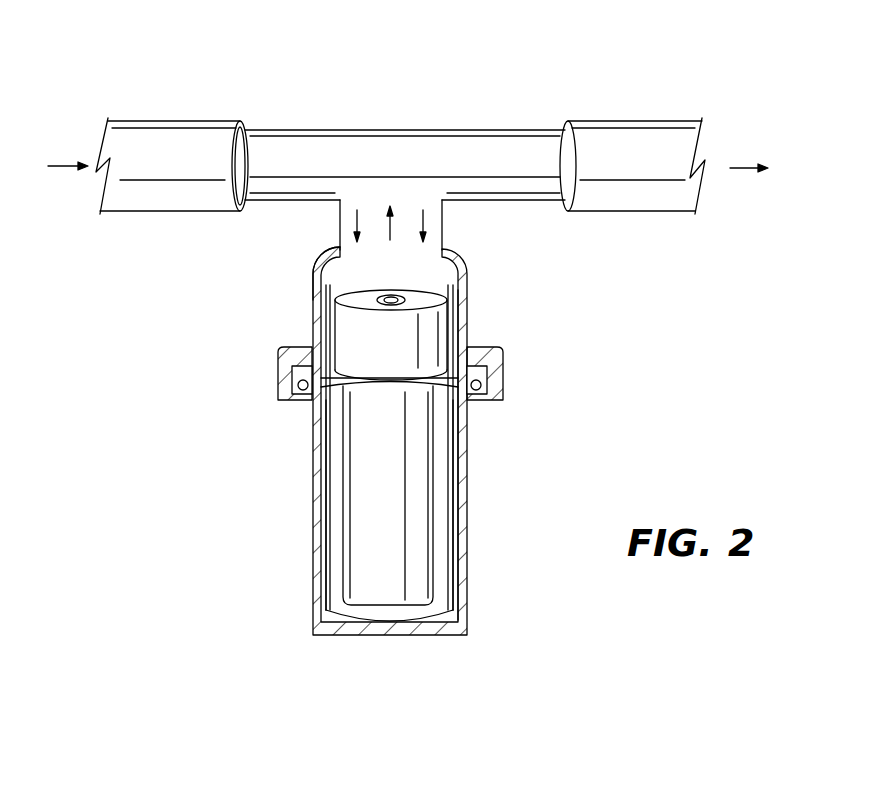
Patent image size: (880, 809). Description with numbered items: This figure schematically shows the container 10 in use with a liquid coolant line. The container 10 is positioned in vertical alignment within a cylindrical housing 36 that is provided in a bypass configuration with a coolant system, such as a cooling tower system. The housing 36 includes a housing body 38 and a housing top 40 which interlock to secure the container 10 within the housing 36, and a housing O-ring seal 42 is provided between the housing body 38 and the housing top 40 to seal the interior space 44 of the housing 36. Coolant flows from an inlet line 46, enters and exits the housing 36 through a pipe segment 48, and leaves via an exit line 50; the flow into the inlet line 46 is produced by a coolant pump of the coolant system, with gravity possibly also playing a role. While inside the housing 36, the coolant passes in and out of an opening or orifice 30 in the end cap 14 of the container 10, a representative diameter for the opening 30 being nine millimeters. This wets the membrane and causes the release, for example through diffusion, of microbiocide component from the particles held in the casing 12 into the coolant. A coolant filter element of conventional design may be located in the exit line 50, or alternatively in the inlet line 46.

The container 10 is at (441, 498).
The casing 12 is at (450, 478).
The end cap 14 is at (360, 322).
The opening 30 is at (391, 297).
The cylindrical housing 36 is at (292, 492).
The housing body 38 is at (312, 452).
The housing top 40 is at (320, 297).
The housing O-ring seal 42 is at (292, 388).
The interior space 44 is at (335, 508).
The inlet line 46 is at (148, 123).
The pipe segment 48 is at (340, 228).
The exit line 50 is at (618, 211).